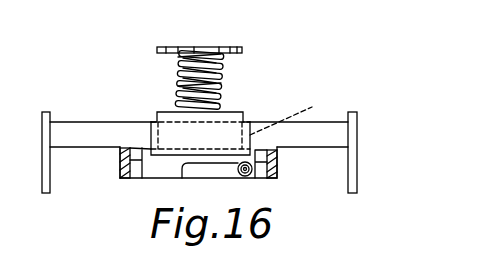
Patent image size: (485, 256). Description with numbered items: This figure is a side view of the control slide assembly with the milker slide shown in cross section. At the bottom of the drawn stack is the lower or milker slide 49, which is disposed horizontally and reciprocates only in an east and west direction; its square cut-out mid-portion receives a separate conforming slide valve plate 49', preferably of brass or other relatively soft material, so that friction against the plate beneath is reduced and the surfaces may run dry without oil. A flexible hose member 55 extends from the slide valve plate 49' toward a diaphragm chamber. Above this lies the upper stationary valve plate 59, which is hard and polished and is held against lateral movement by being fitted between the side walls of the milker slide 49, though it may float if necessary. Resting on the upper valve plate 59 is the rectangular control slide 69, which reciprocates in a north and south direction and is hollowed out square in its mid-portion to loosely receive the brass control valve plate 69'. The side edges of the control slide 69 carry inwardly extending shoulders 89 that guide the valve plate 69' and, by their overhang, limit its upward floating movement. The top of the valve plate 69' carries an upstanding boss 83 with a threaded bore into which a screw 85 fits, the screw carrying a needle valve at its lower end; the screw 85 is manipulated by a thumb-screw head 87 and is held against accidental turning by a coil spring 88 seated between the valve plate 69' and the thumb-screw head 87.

The thumb-screw head 87 is at (229, 47).
The coil spring 88 is at (222, 60).
The screw 85 is at (182, 71).
The upstanding boss 83 is at (222, 80).
The inwardly extending shoulders 89 is at (239, 112).
The control slide 69 is at (199, 145).
The control valve plate 69' is at (297, 114).
The upper stationary valve plate 59 is at (119, 156).
The milker slide 49 is at (120, 179).
The flexible hose member 55 is at (183, 178).
The slide valve plate 49' is at (276, 177).